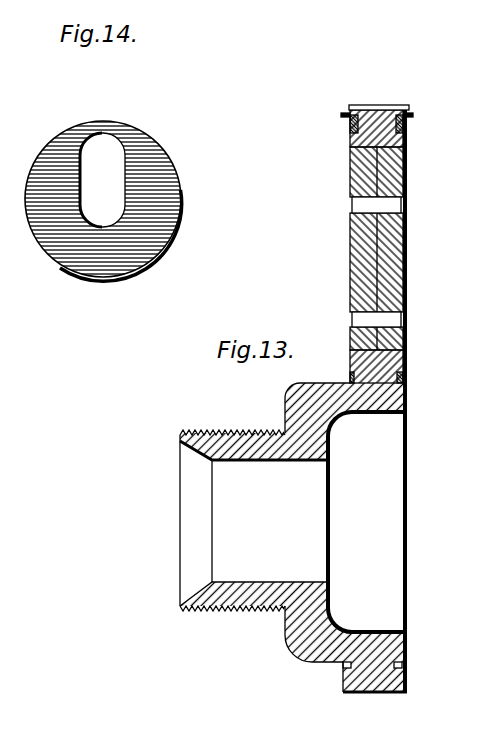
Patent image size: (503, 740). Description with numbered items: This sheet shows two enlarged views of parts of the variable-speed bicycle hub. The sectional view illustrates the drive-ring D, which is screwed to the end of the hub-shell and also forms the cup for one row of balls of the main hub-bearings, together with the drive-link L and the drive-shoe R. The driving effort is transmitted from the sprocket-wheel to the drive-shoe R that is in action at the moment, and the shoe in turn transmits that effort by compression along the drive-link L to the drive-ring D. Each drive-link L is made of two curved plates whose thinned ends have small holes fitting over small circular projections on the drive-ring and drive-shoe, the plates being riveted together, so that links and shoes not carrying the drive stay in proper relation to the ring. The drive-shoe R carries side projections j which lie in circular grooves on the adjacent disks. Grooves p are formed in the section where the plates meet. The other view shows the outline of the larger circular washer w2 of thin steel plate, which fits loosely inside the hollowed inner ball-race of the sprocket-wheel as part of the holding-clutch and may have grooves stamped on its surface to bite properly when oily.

In FIG. 14, the circular washer w2 is at (181, 200).
In FIG. 13, the side projection j is at (342, 113).
In FIG. 13, the drive-shoe R is at (377, 122).
In FIG. 13, the grooves p is at (383, 203).
In FIG. 13, the drive-link L is at (400, 256).
In FIG. 13, the drive-ring D is at (313, 403).